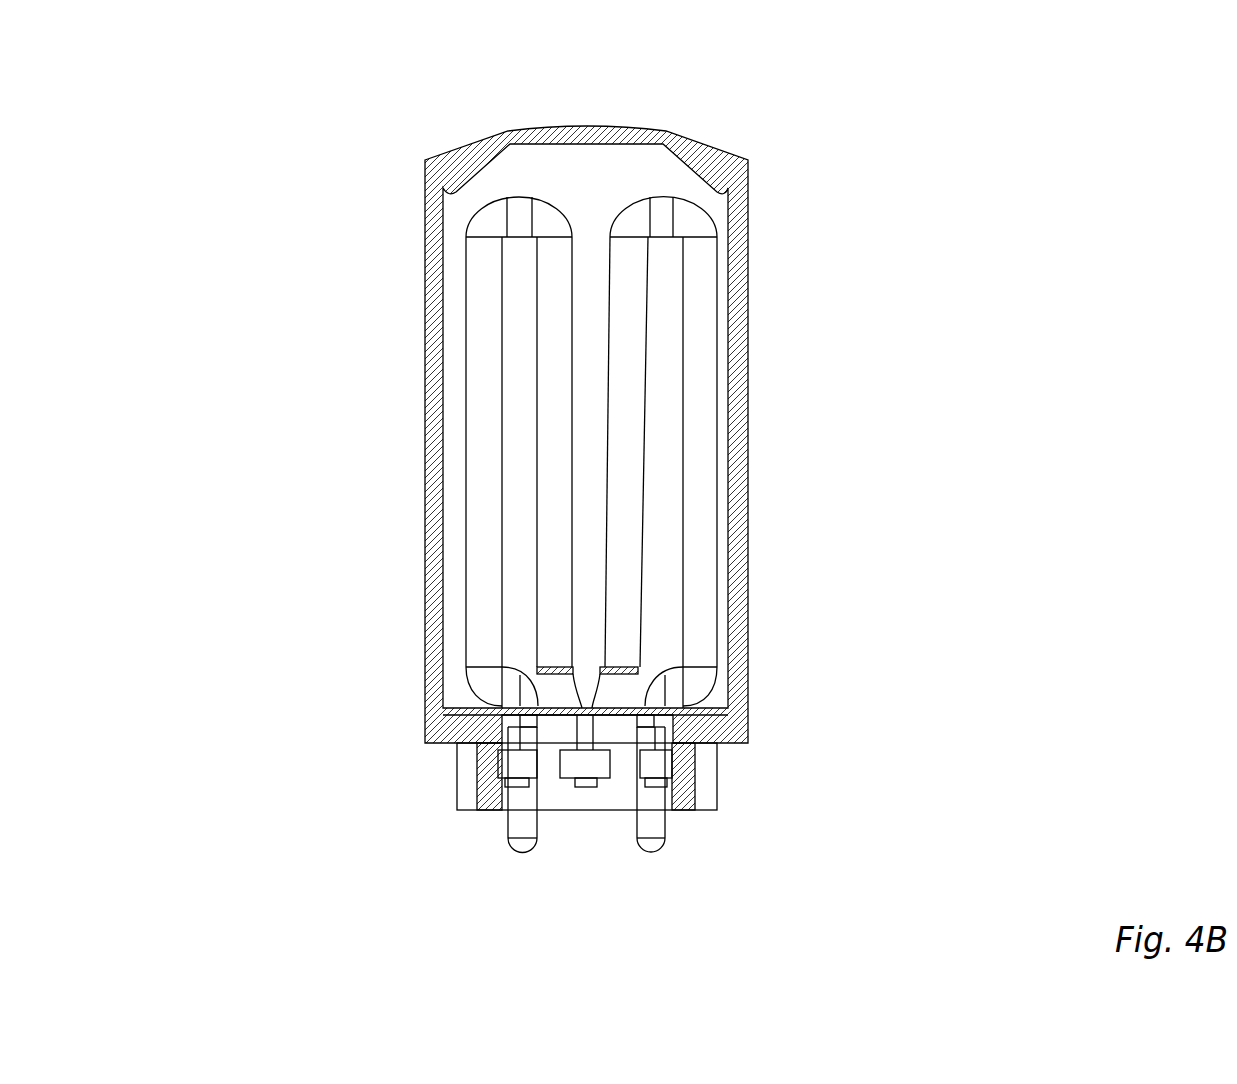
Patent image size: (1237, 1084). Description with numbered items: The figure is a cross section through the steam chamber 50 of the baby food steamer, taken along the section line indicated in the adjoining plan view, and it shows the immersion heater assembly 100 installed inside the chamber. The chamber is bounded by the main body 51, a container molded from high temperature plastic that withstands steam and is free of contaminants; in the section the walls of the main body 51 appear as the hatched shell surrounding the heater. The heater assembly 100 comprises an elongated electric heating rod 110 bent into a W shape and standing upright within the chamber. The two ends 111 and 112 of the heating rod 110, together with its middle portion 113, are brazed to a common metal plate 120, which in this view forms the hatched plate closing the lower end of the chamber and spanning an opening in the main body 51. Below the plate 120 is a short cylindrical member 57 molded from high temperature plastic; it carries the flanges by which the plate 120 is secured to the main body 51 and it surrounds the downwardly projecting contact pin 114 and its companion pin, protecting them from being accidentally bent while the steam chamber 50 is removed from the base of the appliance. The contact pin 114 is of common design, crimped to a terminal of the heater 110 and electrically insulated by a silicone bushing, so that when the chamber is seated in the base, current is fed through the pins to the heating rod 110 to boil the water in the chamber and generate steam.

The steam chamber 50 is at (1110, 367).
The main body 51 is at (748, 382).
The short cylindrical member 57 is at (500, 780).
The immersion heater assembly 100 is at (635, 371).
The electric heating rod 110 is at (700, 565).
The end of heating rod 111 is at (672, 700).
The end of heating rod 112 is at (522, 703).
The middle portion of heating rod 113 is at (582, 705).
The contact pin 114 is at (522, 822).
The metal plate 120 is at (633, 705).